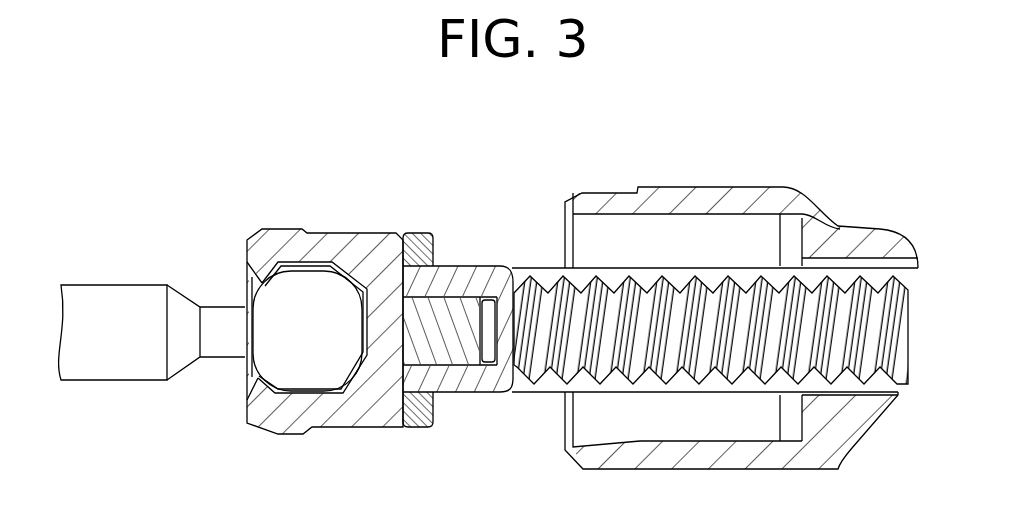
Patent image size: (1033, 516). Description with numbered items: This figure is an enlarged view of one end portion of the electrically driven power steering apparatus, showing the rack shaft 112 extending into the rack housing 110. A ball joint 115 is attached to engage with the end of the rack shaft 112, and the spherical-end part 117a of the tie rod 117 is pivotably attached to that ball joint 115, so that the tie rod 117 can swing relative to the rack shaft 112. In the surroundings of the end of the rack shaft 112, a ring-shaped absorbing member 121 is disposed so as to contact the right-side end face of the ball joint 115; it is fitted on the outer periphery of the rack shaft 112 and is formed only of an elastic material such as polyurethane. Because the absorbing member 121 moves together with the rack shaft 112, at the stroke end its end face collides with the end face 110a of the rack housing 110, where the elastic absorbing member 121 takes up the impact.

The rack housing 110 is at (756, 187).
The end face of rack housing 110a is at (795, 237).
The rack shaft 112 is at (513, 393).
The ball joint 115 is at (297, 227).
The tie rod 117 is at (130, 366).
The spherical-end part 117a is at (305, 366).
The absorbing member 121 is at (432, 233).